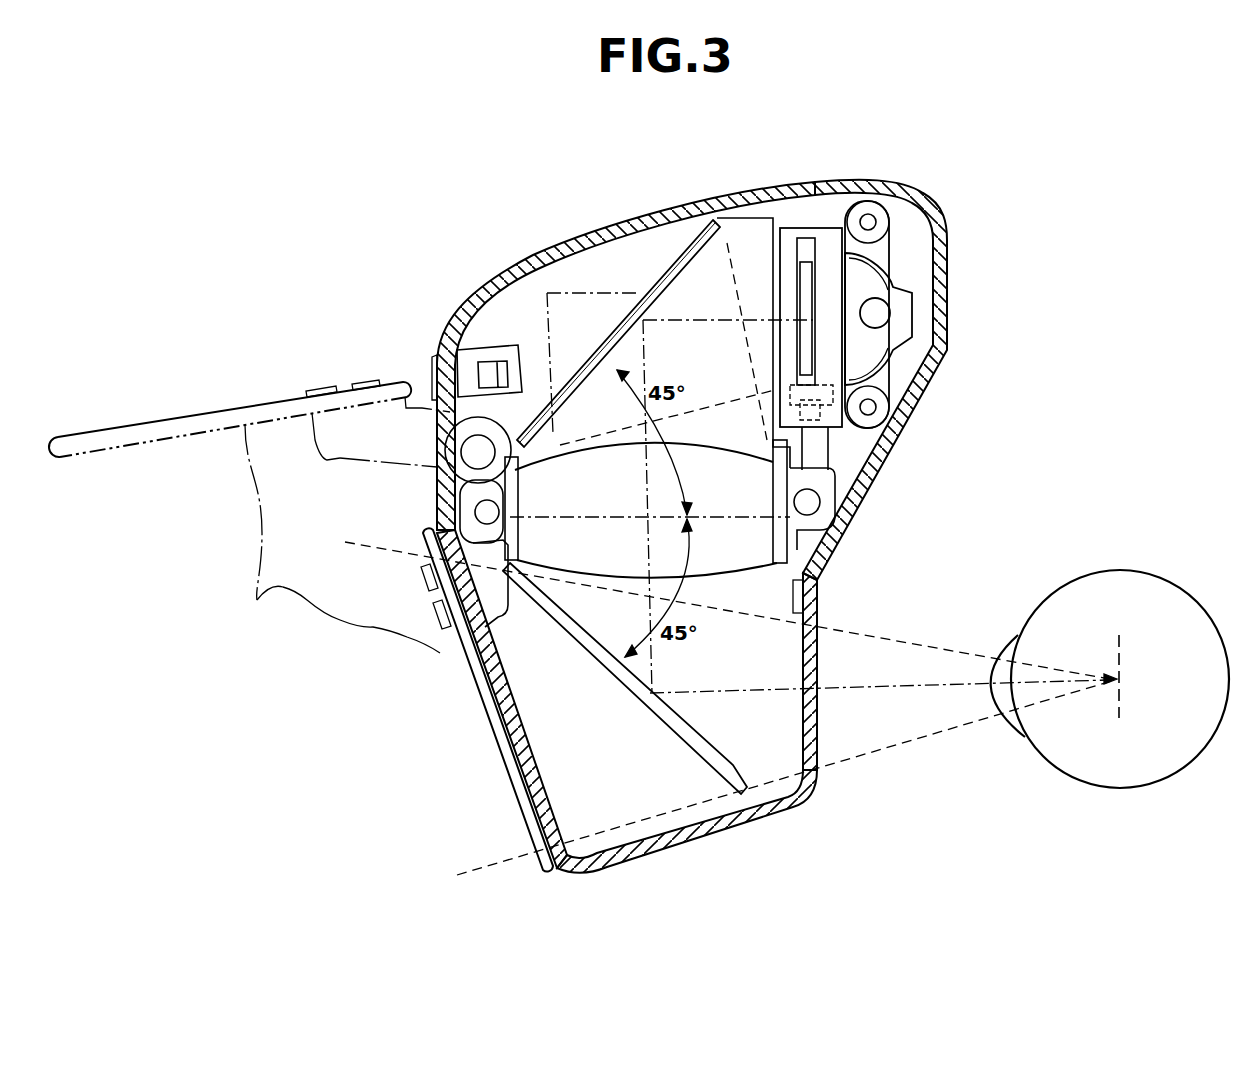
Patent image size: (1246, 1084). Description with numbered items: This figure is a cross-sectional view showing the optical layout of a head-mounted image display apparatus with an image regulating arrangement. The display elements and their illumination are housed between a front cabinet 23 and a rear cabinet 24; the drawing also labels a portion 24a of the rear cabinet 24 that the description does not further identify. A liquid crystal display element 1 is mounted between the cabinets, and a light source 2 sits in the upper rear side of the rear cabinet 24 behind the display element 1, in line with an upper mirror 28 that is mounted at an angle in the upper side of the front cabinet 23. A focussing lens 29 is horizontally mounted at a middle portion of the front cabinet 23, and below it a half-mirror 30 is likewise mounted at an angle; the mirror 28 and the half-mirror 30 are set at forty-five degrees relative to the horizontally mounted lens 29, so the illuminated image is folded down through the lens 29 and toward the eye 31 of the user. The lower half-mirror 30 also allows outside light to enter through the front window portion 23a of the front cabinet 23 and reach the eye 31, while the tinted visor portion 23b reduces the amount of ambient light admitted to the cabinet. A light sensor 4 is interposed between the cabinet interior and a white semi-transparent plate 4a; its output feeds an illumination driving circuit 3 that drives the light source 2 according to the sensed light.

The liquid crystal display element 1 is at (803, 230).
The light source 2 is at (880, 297).
The illumination driving circuit 3 is at (572, 293).
The light sensor 4 is at (498, 363).
The white colored semi-transparent plate 4a is at (478, 380).
The front cabinet 23 is at (620, 218).
The front window portion 23a is at (540, 834).
The visor portion 23b is at (249, 516).
The rear cabinet 24 is at (933, 193).
The housing thin wall 24a is at (820, 617).
The upper mirror 28 is at (703, 270).
The focussing lens 29 is at (753, 477).
The half-mirror 30 is at (733, 765).
The eye 31 is at (1057, 608).